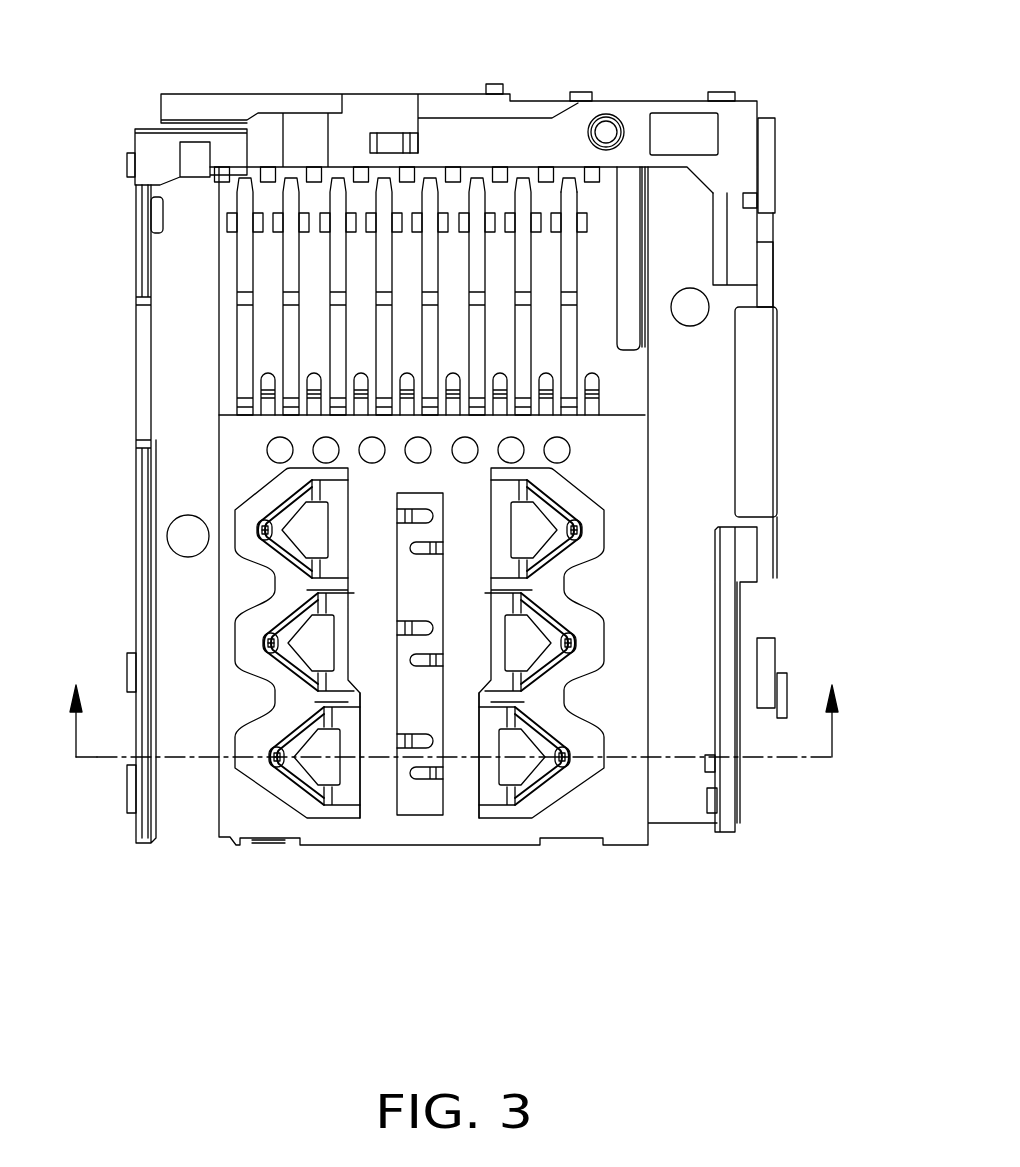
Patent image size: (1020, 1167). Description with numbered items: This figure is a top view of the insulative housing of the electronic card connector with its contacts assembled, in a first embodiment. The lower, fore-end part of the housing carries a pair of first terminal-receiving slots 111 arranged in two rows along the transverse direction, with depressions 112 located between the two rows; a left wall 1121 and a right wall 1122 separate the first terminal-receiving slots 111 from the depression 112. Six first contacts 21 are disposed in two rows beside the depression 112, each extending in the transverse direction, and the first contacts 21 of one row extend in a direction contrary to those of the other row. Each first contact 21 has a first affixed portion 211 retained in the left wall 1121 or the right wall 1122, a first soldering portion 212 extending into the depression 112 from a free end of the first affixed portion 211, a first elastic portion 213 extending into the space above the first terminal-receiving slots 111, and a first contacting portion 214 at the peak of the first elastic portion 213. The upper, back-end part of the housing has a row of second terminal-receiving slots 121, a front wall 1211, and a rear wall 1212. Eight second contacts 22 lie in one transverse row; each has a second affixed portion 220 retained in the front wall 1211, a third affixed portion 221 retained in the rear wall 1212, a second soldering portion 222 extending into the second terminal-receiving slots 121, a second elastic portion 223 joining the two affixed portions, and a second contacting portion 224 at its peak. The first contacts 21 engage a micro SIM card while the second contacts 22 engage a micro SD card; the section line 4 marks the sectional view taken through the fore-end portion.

The rear wall 1212 is at (507, 148).
The second terminal-receiving slots 121 is at (245, 358).
The front wall 1211 is at (292, 424).
The second contacts 22 is at (564, 286).
The third affixed portion 221 is at (573, 173).
The second elastic portion 223 is at (568, 208).
The second contacting portion 224 is at (572, 267).
The second affixed portion 220 is at (570, 408).
The second soldering portion 222 is at (552, 377).
The first contacts 21 is at (584, 618).
The first elastic portion 213 is at (552, 503).
The first contacting portion 214 is at (583, 532).
The first affixed portion 211 is at (502, 532).
The first soldering portion 212 is at (425, 547).
The first terminal-receiving slots 111 is at (275, 785).
The left wall 1121 is at (383, 792).
The right wall 1122 is at (463, 783).
The depressions 112 is at (621, 715).
The section line 4- 4 is at (457, 721).